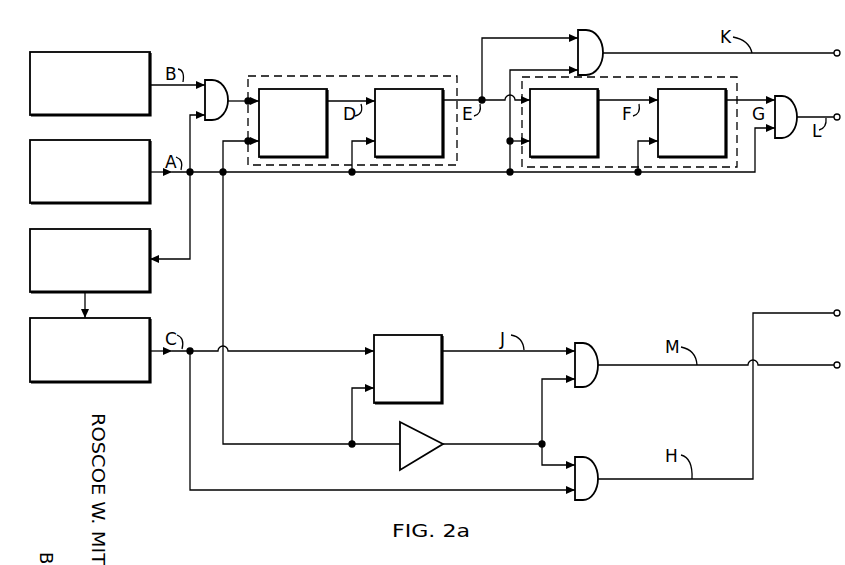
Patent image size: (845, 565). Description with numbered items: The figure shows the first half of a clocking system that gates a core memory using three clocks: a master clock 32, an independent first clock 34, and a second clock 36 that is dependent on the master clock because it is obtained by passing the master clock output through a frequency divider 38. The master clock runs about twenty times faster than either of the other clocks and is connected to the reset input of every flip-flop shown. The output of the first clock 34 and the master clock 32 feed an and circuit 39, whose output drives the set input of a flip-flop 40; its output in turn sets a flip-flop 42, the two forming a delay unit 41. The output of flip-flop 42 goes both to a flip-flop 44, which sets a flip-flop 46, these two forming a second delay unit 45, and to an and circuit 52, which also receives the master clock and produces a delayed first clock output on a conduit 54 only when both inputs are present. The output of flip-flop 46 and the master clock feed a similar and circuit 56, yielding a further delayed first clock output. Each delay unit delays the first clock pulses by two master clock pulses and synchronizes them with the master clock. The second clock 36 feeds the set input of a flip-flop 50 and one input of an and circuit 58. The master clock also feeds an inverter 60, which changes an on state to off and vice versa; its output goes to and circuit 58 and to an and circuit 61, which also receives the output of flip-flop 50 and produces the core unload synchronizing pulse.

The master clock 32 is at (103, 140).
The clock 1 34 is at (103, 52).
The clock 2 36 is at (97, 318).
The frequency divider 38 is at (103, 229).
The and circuit 39 is at (211, 120).
The flip-flop 40 is at (318, 89).
The delay unit 41 is at (373, 76).
The flip-flop 42 is at (436, 89).
The flip-flop 44 is at (588, 89).
The delay unit 45 is at (645, 77).
The flip-flop 46 is at (718, 89).
The flip-flop 50 is at (403, 335).
The and circuit 52 is at (594, 48).
The conduit 54 is at (648, 53).
The and circuit 56 is at (783, 97).
The and circuit 58 is at (588, 465).
The inverter 60 is at (432, 434).
The and circuit 61 is at (582, 338).